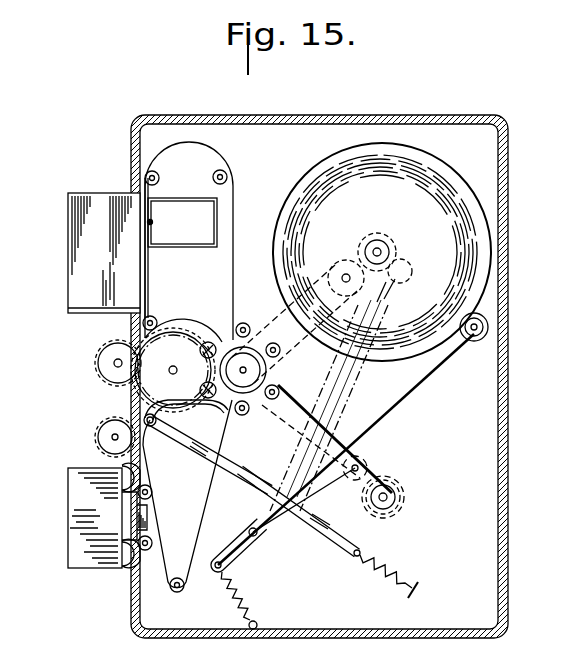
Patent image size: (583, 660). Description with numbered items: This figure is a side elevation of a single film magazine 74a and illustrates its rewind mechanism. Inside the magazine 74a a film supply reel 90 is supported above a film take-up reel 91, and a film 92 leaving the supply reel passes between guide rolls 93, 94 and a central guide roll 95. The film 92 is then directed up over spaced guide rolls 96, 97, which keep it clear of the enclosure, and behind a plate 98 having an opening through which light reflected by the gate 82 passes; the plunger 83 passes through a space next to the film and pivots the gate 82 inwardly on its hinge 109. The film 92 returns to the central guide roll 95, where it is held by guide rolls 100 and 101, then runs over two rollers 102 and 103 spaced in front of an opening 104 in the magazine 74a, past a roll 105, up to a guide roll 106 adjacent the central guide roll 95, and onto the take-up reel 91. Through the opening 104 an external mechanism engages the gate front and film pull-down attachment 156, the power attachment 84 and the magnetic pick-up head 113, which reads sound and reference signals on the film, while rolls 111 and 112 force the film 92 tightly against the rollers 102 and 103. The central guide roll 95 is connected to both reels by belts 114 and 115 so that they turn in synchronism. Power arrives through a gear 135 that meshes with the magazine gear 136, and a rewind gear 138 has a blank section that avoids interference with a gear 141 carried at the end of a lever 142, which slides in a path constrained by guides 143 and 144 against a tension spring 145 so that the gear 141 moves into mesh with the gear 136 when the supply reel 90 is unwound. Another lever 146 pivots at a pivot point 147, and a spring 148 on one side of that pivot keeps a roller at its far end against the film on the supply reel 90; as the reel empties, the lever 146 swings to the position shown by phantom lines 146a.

The magazine 74a is at (393, 113).
The gate front and film pull-down attachment 156 is at (78, 252).
The guide roll 97 is at (158, 175).
The hinge 109 is at (150, 190).
The guide roll 96 is at (228, 180).
The plunger 83 is at (153, 222).
The gate 82 is at (203, 240).
The plate 98 is at (150, 310).
The guide roll 100 is at (189, 242).
The guide roll 94 is at (243, 322).
The guide roll 93 is at (279, 342).
The central guide roll 95 is at (266, 376).
The film supply reel 90 is at (380, 240).
The belt 114 is at (332, 270).
The belt 115 is at (335, 392).
The phantom lines 146a is at (341, 386).
The lever 146 is at (388, 414).
The film take-up reel 91 is at (398, 497).
The tension spring 145 is at (390, 568).
The guide 144 is at (322, 540).
The pivot point 147 is at (255, 540).
The spring 148 is at (254, 618).
The roll 105 is at (177, 594).
The opening 104 is at (124, 590).
The roll 112 is at (128, 563).
The magnetic pick-up head 113 is at (148, 522).
The roller 103 is at (152, 545).
The roller 102 is at (152, 496).
The film 92 is at (187, 494).
The guide 143 is at (197, 458).
The gear 141 is at (152, 430).
The lever 142 is at (245, 479).
The guide roll 106 is at (242, 416).
The guide roll 101 is at (208, 406).
The roll 111 is at (120, 468).
The rewind gear 138 is at (96, 440).
The gear 136 is at (135, 392).
The gear 135 is at (110, 352).
The power attachment 84 is at (92, 364).